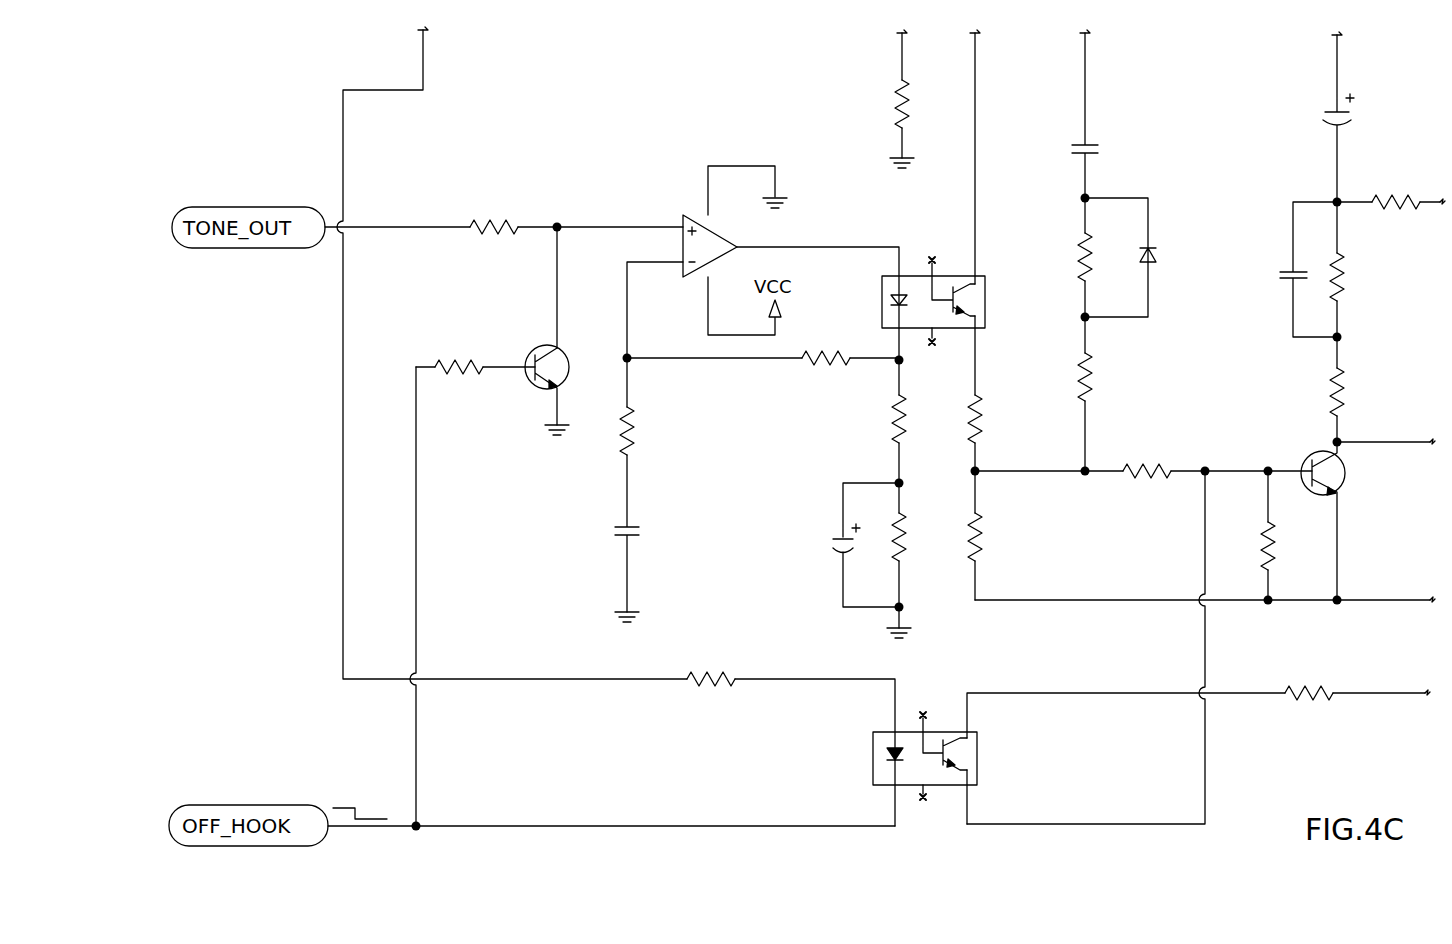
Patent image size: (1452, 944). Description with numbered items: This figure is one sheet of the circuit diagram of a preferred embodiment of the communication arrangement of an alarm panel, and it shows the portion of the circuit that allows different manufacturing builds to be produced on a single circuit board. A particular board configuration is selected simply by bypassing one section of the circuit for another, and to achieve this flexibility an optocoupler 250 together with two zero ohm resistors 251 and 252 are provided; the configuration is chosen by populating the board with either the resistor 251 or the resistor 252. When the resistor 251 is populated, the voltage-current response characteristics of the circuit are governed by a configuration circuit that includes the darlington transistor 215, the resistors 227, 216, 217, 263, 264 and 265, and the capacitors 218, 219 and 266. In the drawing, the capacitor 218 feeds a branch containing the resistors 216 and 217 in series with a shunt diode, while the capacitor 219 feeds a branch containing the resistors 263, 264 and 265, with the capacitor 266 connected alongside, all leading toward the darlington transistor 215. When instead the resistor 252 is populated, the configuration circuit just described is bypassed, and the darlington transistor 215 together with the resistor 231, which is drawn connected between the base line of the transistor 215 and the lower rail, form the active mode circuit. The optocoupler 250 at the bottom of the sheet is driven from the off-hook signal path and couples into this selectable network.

The darlington transistor 215 is at (1348, 480).
The resistor 216 is at (1085, 235).
The resistor 217 is at (1095, 352).
The capacitor 218 is at (1100, 150).
The capacitor 219 is at (1362, 120).
The resistor 227 is at (978, 410).
The resistor 231 is at (1280, 557).
The optocoupler 250 is at (980, 762).
The 0 ohm resistor 251 is at (1165, 487).
The 0 ohm resistor 252 is at (978, 555).
The resistor 263 is at (1400, 212).
The resistor 264 is at (1343, 302).
The resistor 265 is at (1345, 364).
The capacitor 266 is at (1275, 275).